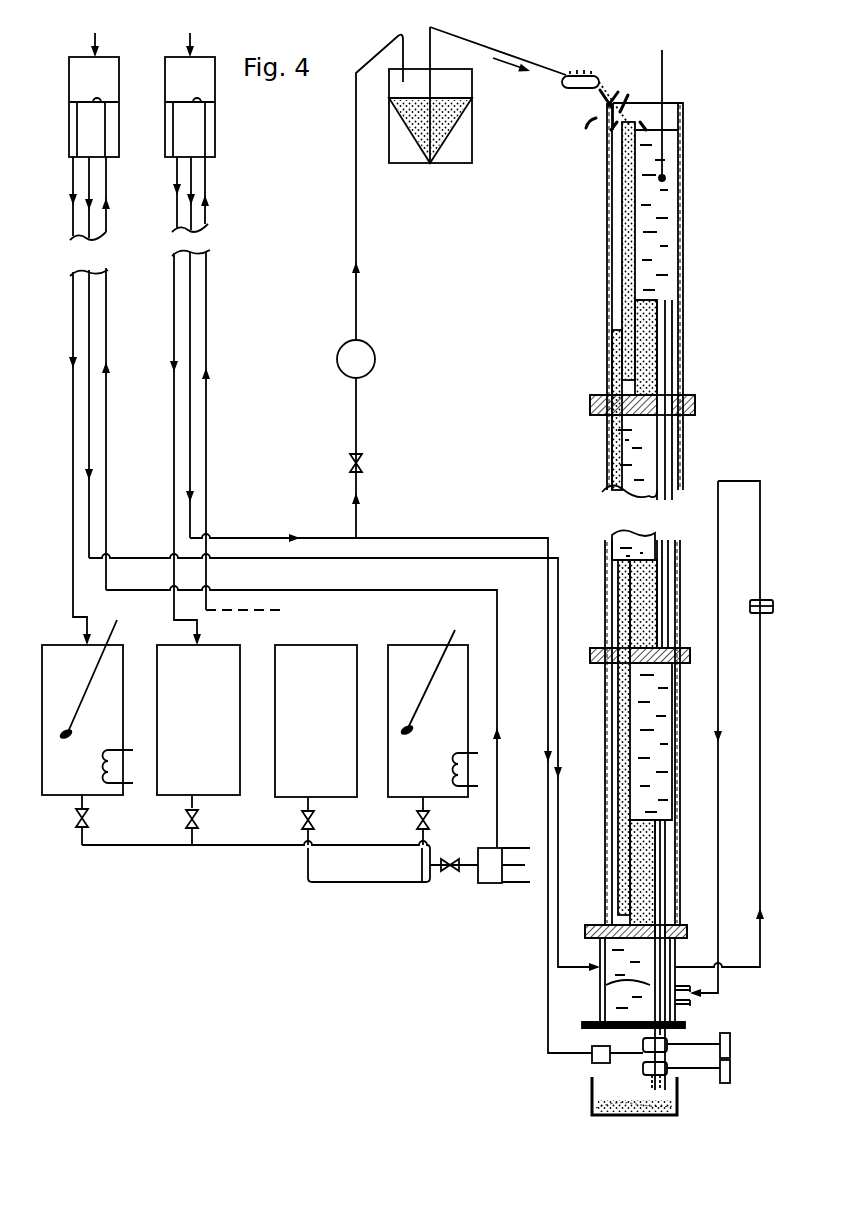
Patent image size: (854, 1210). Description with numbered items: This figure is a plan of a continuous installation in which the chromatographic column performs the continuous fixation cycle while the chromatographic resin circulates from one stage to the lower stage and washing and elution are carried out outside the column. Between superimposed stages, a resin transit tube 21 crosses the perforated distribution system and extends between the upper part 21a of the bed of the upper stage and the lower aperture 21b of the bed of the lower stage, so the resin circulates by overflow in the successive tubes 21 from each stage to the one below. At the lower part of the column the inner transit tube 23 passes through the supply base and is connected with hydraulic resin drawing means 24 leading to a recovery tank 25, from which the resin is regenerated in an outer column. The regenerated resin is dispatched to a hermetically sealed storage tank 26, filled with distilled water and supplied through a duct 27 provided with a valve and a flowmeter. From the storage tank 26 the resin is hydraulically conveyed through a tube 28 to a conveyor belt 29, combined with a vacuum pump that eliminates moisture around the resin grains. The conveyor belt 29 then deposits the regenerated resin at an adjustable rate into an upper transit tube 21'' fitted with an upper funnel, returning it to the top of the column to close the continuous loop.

The resin transit tube 21 is at (625, 799).
The upper part of the bed 21a is at (616, 560).
The lower aperture of the tube 21b is at (618, 906).
The upper transit tube 21'' is at (620, 275).
The inner transit tube 23 is at (595, 986).
The hydraulic resin drawing means 24 is at (616, 1067).
The recovery tank 25 is at (590, 1100).
The storage tank 26 is at (470, 149).
The duct 27 is at (356, 317).
The tube 28 is at (548, 58).
The conveyor belt 29 is at (564, 86).